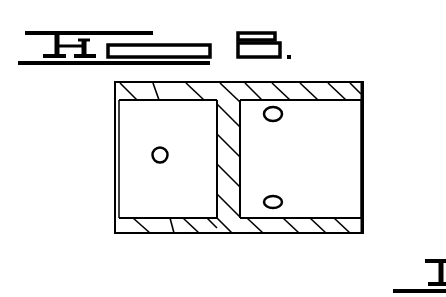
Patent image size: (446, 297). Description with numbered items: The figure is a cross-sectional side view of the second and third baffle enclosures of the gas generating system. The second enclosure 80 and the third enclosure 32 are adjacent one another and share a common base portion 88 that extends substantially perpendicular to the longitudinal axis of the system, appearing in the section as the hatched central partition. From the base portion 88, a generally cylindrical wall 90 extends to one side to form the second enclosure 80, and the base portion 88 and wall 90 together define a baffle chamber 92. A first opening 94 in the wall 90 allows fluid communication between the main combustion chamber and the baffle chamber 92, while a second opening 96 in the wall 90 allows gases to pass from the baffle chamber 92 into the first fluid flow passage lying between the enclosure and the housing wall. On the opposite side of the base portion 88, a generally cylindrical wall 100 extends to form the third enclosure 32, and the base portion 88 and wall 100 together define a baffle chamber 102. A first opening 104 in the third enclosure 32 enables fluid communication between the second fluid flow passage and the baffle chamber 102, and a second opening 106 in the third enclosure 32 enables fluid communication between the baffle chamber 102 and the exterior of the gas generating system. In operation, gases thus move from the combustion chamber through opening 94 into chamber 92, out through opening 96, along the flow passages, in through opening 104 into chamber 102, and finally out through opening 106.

The second enclosure 80 is at (349, 81).
The base portion 88 is at (224, 219).
The wall 90 is at (313, 234).
The baffle chamber 92 is at (355, 113).
The first opening 94 is at (365, 143).
The second opening 96 is at (283, 201).
The wall 100 is at (120, 229).
The baffle chamber 102 is at (120, 113).
The first opening 104 is at (152, 155).
The second opening 106 is at (114, 178).
The third enclosure 32 is at (133, 234).